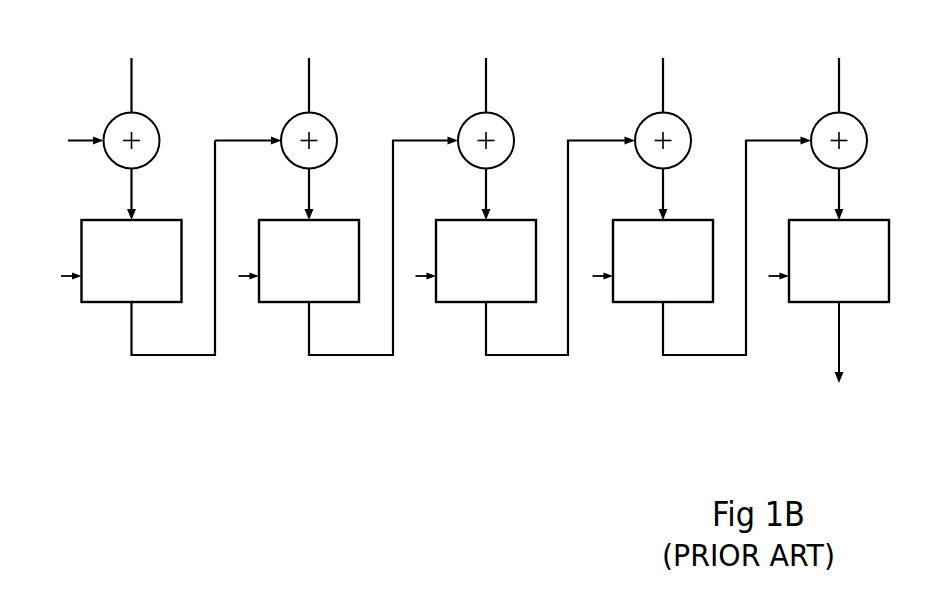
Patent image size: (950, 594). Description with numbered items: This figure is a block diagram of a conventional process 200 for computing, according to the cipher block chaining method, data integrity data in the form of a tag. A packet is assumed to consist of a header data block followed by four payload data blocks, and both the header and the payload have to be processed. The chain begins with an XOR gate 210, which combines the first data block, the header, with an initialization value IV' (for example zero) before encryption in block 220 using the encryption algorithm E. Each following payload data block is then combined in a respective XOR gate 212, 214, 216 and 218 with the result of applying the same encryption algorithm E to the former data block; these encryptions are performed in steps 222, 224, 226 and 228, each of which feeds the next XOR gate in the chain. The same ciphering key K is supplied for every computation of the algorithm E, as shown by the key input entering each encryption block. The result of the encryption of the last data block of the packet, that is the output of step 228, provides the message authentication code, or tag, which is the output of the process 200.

The process 200 is at (477, 266).
The XOR gate 210 is at (148, 118).
The XOR gate 212 is at (326, 118).
The XOR gate 214 is at (502, 118).
The XOR gate 216 is at (680, 118).
The XOR gate 218 is at (856, 118).
The encryption block 220 is at (103, 302).
The encryption step 222 is at (280, 302).
The encryption step 224 is at (458, 302).
The encryption step 226 is at (634, 302).
The encryption step 228 is at (810, 302).